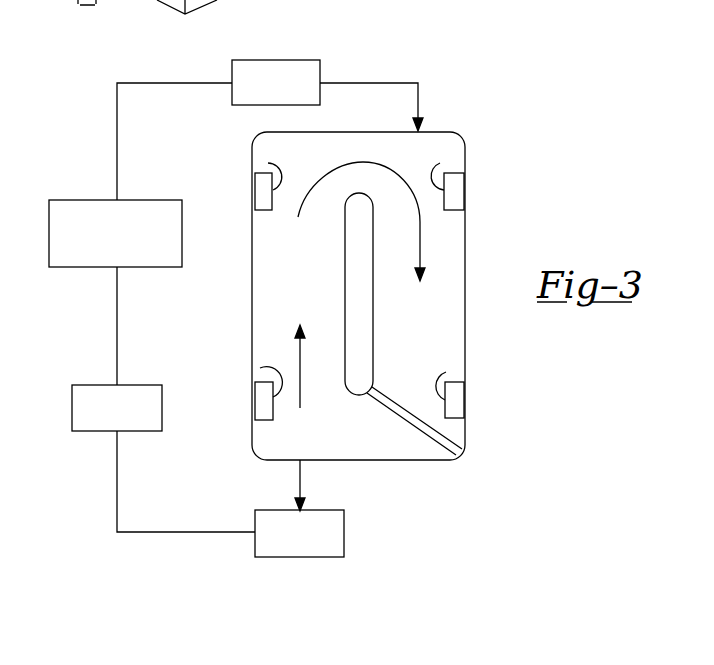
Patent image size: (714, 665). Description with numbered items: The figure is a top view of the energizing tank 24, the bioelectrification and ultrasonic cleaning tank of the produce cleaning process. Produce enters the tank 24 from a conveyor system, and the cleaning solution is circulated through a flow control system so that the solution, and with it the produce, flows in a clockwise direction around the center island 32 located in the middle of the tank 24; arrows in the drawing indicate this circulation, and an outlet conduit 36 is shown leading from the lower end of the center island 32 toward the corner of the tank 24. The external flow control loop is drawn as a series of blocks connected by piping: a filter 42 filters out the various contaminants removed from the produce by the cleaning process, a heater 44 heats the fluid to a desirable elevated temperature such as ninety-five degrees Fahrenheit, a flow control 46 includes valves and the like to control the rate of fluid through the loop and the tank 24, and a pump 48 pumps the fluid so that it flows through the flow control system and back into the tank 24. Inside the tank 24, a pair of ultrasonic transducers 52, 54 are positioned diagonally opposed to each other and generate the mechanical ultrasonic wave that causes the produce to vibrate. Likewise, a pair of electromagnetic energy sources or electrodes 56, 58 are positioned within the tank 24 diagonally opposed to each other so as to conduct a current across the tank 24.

The energizing tank 24 is at (515, 200).
The center island 32 is at (358, 310).
The drain conduit 36 is at (412, 423).
The filter 42 is at (344, 530).
The heater 44 is at (94, 431).
The flow control 46 is at (83, 267).
The pump 48 is at (275, 60).
The ultrasonic transducer 52 is at (268, 163).
The ultrasonic transducer 54 is at (446, 372).
The electrode 56 is at (440, 163).
The electrode 58 is at (260, 368).